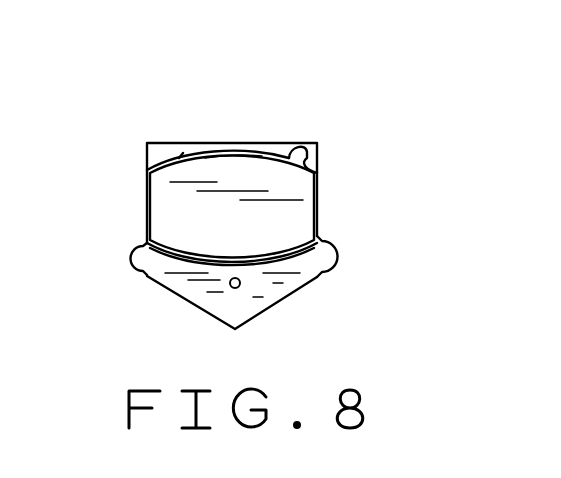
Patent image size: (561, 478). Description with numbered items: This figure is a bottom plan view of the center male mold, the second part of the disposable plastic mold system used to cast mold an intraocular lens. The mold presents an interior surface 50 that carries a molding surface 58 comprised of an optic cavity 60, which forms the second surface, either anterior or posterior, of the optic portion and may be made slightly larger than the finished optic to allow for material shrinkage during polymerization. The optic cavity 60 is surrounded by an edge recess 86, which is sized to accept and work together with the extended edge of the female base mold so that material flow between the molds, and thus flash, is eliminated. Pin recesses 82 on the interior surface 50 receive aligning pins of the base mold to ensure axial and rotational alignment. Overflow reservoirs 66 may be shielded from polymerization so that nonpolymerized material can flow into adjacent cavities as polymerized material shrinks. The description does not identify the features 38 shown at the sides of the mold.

The notch 38 is at (140, 262).
The interior surface 50 is at (192, 281).
The molding surface 58 is at (212, 173).
The optic cavity 60 is at (248, 170).
The overflow reservoirs 66 is at (305, 146).
The pin recesses 82 is at (245, 282).
The edge recess 86 is at (147, 172).